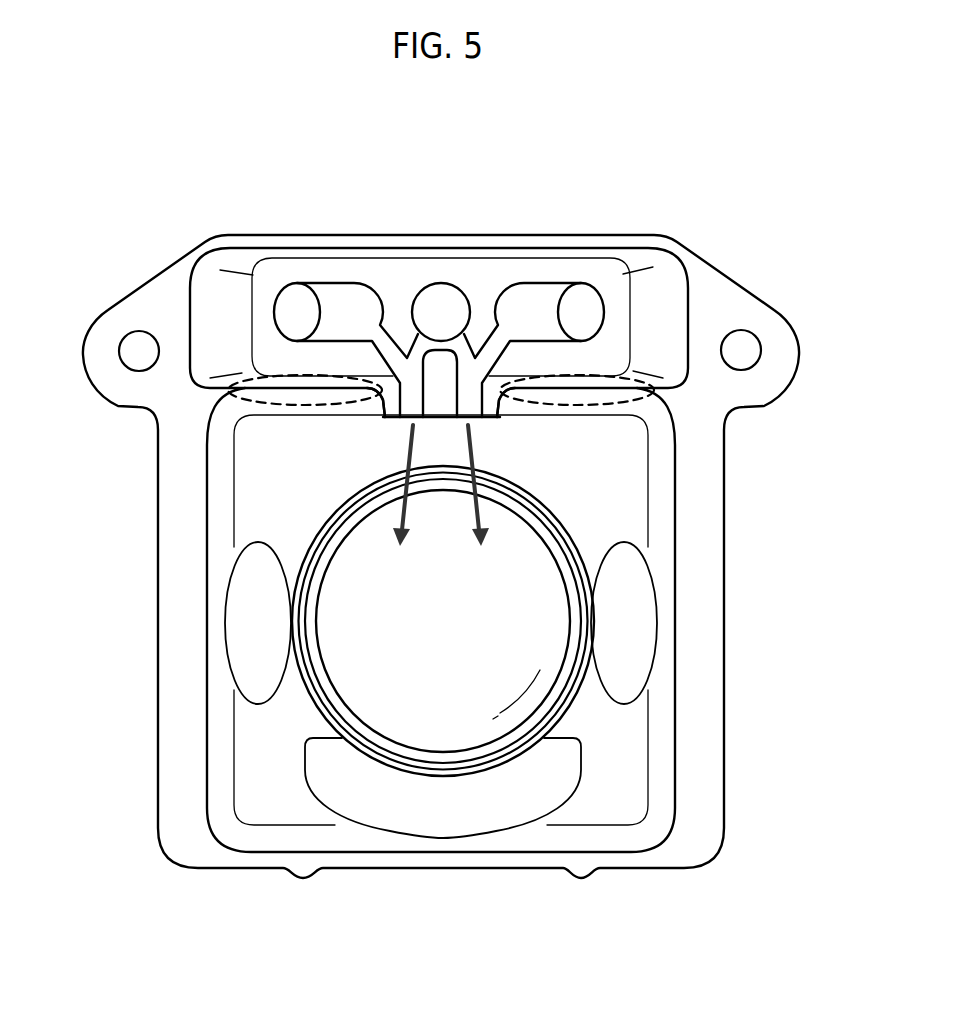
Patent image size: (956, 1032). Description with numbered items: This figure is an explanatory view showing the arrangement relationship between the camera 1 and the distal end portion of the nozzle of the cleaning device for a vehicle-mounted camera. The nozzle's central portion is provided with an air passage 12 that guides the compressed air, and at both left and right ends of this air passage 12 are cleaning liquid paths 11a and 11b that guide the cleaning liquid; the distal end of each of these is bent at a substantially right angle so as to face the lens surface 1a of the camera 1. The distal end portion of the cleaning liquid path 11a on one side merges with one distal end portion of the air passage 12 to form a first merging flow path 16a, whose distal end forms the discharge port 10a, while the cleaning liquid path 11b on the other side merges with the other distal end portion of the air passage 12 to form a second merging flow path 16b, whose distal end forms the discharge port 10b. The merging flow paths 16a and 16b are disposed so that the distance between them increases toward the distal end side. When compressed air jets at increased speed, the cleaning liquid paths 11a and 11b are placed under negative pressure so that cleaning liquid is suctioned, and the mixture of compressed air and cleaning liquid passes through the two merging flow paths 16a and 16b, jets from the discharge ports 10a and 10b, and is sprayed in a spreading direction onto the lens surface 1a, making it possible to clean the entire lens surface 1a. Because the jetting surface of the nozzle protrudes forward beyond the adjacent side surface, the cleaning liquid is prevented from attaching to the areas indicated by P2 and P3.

The camera 1 is at (629, 766).
The lens surface 1a is at (550, 653).
The discharge port 10a is at (400, 420).
The discharge port 10b is at (482, 420).
The cleaning liquid path 11a is at (293, 297).
The cleaning liquid path 11b is at (575, 297).
The air passage 12 is at (436, 297).
The merging flow path 16a is at (400, 392).
The merging flow path 16b is at (482, 392).
The area P2 is at (250, 400).
The area P3 is at (630, 400).